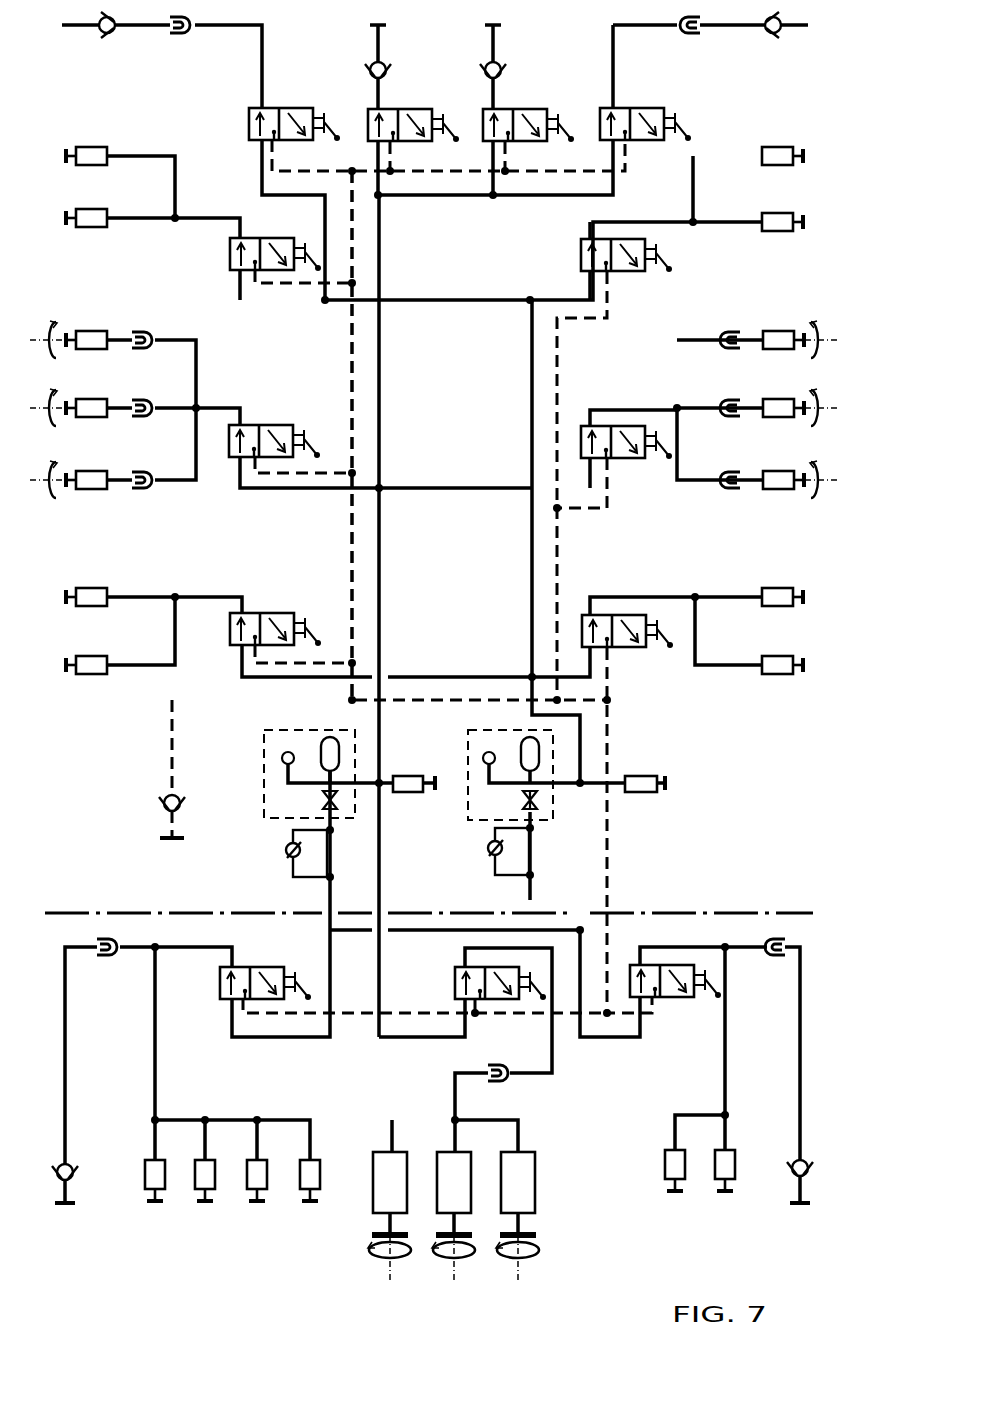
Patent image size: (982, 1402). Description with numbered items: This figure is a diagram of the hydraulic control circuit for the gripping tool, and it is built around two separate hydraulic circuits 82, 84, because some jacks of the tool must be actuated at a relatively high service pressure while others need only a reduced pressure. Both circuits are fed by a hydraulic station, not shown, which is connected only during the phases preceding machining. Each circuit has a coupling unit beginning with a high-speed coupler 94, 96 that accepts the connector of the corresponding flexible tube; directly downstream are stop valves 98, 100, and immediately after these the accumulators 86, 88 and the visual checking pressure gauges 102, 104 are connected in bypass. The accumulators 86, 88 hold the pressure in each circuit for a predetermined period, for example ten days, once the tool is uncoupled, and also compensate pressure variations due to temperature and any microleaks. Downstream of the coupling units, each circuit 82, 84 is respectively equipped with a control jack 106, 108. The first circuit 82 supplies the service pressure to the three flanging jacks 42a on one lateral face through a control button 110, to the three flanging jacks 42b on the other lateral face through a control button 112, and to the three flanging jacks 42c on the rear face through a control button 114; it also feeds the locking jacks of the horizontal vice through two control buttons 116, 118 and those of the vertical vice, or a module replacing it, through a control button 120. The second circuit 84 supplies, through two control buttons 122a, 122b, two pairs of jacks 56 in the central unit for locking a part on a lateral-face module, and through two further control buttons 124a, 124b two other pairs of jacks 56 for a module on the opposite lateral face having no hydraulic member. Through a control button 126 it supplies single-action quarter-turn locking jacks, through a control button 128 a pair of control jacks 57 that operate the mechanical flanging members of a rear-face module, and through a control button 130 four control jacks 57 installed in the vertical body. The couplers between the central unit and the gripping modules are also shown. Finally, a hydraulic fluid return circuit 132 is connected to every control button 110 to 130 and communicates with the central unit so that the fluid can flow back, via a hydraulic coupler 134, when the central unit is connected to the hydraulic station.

The flanging jacks 42a is at (780, 334).
The flanging jacks 42b is at (88, 335).
The flanging jacks 42c is at (520, 1183).
The jacks 56 is at (92, 218).
The control jacks 57 is at (220, 1222).
The hydraulic circuit 82 is at (385, 555).
The hydraulic circuit 84 is at (527, 607).
The accumulator 86 is at (322, 745).
The accumulator 88 is at (538, 752).
The high-speed coupler 94 is at (288, 857).
The high-speed coupler 96 is at (490, 860).
The stop valve 98 is at (322, 808).
The stop valve 100 is at (545, 805).
The visual checking pressure gauge 102 is at (282, 758).
The visual checking pressure gauge 104 is at (483, 758).
The control jack 106 is at (408, 790).
The control jack 108 is at (645, 793).
The control button 110 is at (622, 460).
The control button 112 is at (262, 425).
The control button 114 is at (455, 990).
The control button 116 is at (420, 109).
The control button 118 is at (540, 109).
The control button 120 is at (655, 108).
The control button 122a is at (648, 272).
The control button 122b is at (642, 650).
The control button 124a is at (230, 248).
The control button 124b is at (268, 613).
The control button 126 is at (302, 108).
The control button 128 is at (668, 997).
The control button 130 is at (222, 990).
The hydraulic fluid return circuit 132 is at (349, 376).
The hydraulic coupler 134 is at (164, 800).